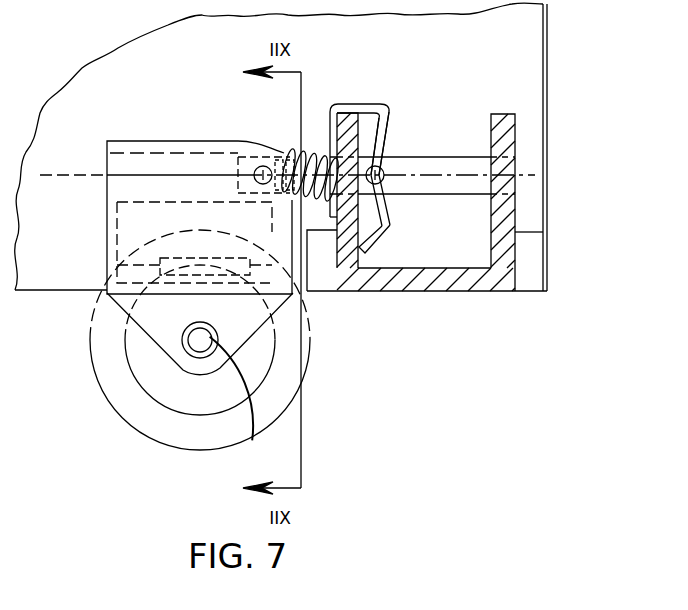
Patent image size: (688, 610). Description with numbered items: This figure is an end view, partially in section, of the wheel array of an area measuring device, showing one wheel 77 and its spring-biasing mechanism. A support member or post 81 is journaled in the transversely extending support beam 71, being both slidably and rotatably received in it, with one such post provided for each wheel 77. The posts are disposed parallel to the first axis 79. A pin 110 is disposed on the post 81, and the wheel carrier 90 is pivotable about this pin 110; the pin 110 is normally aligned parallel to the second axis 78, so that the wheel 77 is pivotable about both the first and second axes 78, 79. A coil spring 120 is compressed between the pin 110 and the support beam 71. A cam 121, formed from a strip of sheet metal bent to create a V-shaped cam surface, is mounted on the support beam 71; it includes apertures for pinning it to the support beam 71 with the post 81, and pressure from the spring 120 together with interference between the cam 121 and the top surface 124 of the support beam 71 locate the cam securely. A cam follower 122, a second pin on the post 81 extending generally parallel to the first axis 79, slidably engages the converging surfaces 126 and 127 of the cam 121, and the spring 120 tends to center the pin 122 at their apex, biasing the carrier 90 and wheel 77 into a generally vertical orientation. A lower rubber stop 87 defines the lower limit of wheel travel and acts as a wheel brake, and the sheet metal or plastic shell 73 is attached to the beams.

The support beam 71 is at (458, 292).
The shell 73 is at (542, 72).
The wheel 77 is at (193, 437).
The second axis 78 is at (258, 168).
The first axis 79 is at (60, 176).
The support member or post 81 is at (420, 163).
The lower rubber stop 87 is at (325, 278).
The wheel carrier 90 is at (132, 141).
The pin 110 is at (267, 152).
The coil spring 120 is at (303, 150).
The cam 121 is at (386, 113).
The cam follower 122 is at (385, 182).
The top surface 124 is at (350, 135).
The converging cam surface 126 is at (383, 138).
The converging cam surface 127 is at (389, 213).